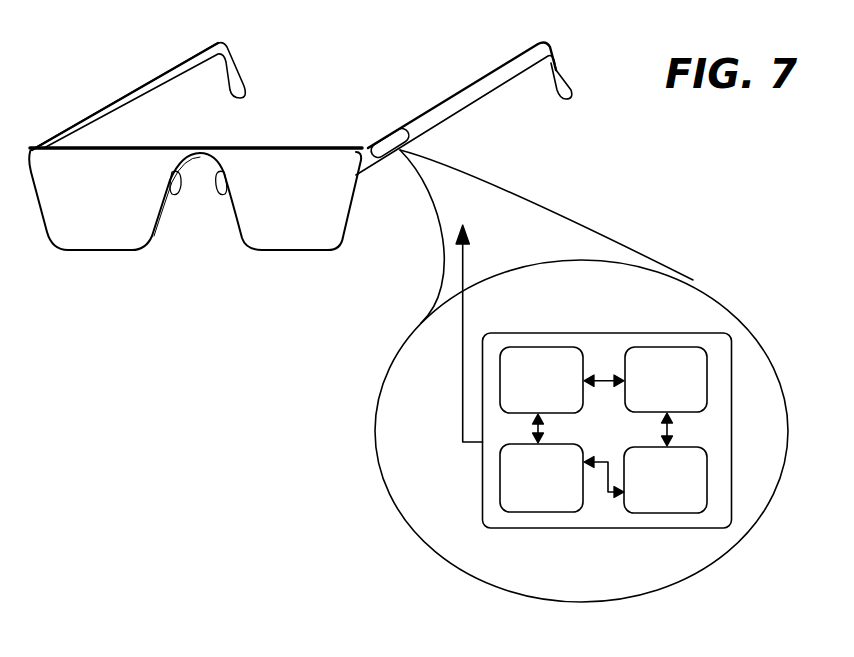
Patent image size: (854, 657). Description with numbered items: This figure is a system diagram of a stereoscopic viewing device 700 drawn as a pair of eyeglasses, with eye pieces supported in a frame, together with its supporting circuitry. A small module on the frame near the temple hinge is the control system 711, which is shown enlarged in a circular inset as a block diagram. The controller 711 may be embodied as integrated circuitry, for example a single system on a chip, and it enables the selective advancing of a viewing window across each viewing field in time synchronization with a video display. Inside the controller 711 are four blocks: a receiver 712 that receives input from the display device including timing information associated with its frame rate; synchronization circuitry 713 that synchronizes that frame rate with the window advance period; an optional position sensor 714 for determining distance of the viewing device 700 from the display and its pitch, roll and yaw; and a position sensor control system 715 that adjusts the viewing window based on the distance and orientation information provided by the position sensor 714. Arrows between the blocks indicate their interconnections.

The system 700 is at (140, 68).
The control system 711 is at (400, 129).
The receiver 712 is at (541, 380).
The synchronization circuitry 713 is at (541, 478).
The position sensor 714 is at (666, 379).
The position sensor control system 715 is at (665, 480).